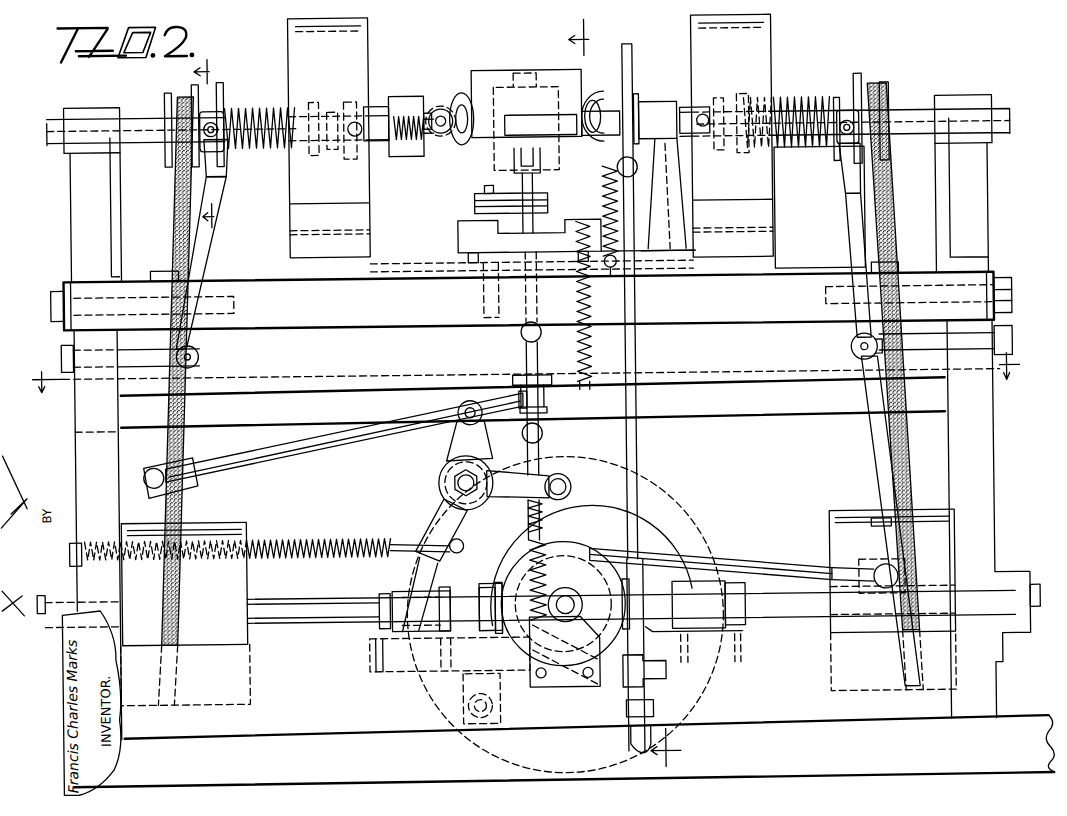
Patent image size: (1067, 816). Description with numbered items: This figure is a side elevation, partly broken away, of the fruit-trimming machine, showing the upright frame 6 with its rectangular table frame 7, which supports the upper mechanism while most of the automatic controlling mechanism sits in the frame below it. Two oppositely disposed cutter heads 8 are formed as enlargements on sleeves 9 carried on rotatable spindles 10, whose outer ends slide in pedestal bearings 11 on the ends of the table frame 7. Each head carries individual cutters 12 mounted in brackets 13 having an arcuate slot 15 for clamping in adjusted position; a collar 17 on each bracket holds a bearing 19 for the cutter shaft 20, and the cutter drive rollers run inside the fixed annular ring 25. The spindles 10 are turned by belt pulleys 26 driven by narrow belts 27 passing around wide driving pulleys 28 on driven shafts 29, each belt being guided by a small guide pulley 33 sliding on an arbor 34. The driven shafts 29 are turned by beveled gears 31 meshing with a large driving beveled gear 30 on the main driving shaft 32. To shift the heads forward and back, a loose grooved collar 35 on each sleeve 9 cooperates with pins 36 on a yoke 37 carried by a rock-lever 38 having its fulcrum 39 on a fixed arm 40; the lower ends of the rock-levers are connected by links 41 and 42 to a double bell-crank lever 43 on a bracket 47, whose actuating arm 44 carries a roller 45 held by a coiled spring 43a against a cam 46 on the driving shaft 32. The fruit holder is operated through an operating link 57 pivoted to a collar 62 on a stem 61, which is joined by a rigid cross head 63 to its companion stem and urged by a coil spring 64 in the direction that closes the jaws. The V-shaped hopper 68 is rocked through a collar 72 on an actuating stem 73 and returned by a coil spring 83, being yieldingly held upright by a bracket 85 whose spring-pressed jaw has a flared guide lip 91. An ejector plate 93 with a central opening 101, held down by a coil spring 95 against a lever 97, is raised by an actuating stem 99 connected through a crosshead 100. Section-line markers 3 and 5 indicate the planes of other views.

The section line 3- 3 is at (523, 374).
The section line 5- 5 is at (634, 394).
The upright frame 6 is at (82, 450).
The table frame 7 is at (400, 312).
The cutter head 8 is at (408, 100).
The sleeve 9 is at (378, 106).
The spindle 10 is at (138, 118).
The pedestal bearing 11 is at (84, 183).
The cutter 12 is at (465, 144).
The bracket 13 is at (430, 148).
The arcuate slot 15 is at (396, 152).
The collar 17 is at (450, 106).
The bearing 19 is at (441, 134).
The cutter shaft 20 is at (437, 108).
The annular race way 25 is at (358, 46).
The belt pulley 26 is at (170, 150).
The belt 27 is at (895, 232).
The driving pulley 28 is at (845, 512).
The driven shaft 29 is at (786, 592).
The driving beveled gear 30 is at (563, 603).
The beveled gear 31 is at (566, 603).
The driving shaft 32 is at (607, 512).
The guide pulley 33 is at (162, 272).
The arbor 34 is at (214, 295).
The loose collar 35 is at (227, 86).
The pin 36 is at (225, 141).
The yoke 37 is at (218, 172).
The rock-lever 38 is at (205, 241).
The fulcrum 39 is at (200, 352).
The fixed arm 40 is at (144, 358).
The link 41 is at (328, 449).
The link 42 is at (742, 562).
The double bell-crank lever 43 is at (462, 441).
The coiled spring 43a is at (297, 540).
The actuating arm 44 is at (516, 475).
The roller 45 is at (571, 487).
The cam 46 is at (642, 510).
The bracket 47 is at (440, 512).
The operating link 57 is at (553, 232).
The stem 61 is at (527, 357).
The collar 62 is at (522, 335).
The cross head 63 is at (544, 435).
The coil spring 64 is at (527, 511).
The hopper 68 is at (490, 74).
The collar 72 is at (641, 170).
The actuating stem 73 is at (640, 368).
The coil spring 83 is at (618, 262).
The bracket 85 is at (604, 93).
The guide lip 91 is at (634, 75).
The ejector plate 93 is at (468, 241).
The coil spring 95 is at (578, 352).
The lever 97 is at (486, 298).
The actuating stem 99 is at (480, 193).
The crosshead 100 is at (548, 210).
The central opening 101 is at (455, 218).